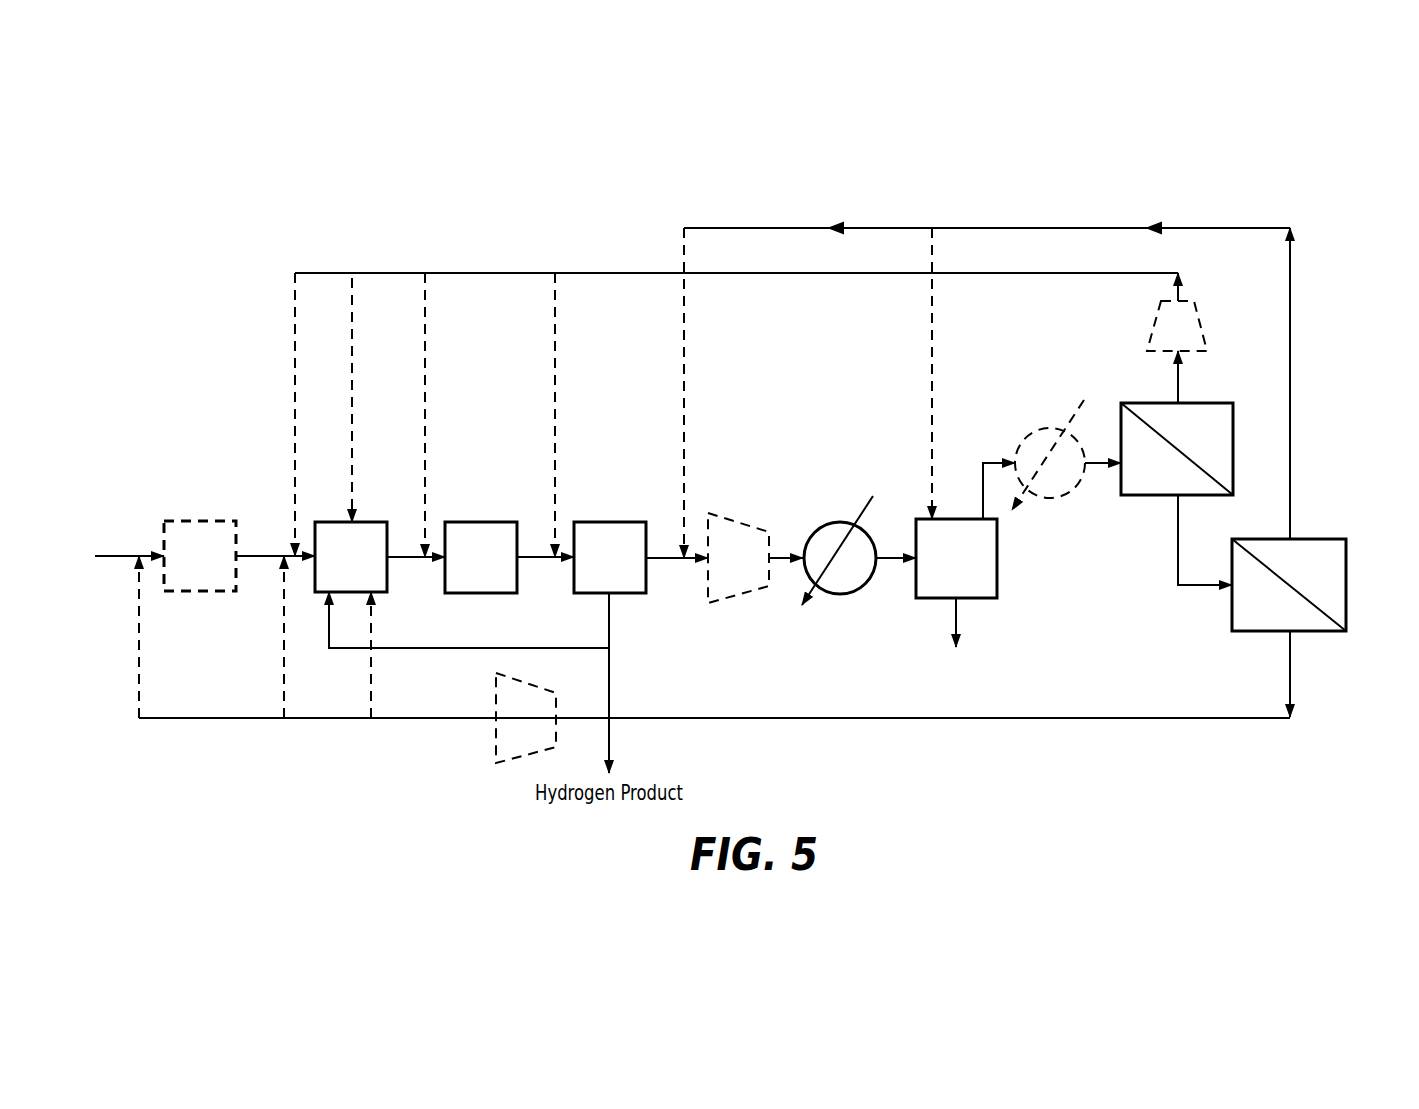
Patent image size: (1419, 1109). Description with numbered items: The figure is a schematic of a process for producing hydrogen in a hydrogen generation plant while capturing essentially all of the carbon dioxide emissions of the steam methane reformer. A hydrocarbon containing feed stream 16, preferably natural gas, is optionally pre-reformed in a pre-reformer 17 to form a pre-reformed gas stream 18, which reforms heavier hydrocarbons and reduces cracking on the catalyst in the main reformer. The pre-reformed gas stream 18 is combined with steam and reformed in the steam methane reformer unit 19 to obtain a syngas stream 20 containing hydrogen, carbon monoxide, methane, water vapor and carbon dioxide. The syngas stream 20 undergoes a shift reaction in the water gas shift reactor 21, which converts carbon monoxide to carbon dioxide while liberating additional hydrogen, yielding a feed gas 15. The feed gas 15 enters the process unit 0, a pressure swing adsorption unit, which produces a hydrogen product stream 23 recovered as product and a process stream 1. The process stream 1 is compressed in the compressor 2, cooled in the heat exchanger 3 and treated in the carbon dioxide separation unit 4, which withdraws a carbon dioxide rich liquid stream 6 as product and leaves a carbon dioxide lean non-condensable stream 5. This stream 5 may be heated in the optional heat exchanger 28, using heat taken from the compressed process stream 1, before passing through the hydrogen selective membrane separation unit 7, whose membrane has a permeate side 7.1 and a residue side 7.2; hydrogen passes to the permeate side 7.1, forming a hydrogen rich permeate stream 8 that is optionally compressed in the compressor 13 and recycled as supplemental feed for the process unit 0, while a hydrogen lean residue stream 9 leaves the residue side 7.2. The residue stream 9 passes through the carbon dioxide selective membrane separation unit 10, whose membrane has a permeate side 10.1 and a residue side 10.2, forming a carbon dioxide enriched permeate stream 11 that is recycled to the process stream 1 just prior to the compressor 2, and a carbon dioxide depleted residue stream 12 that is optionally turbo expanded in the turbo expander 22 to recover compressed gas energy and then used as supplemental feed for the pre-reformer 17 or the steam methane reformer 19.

The process unit 0 is at (602, 566).
The process stream 1 is at (677, 543).
The compressor 2 is at (730, 568).
The heat exchanger 3 is at (843, 569).
The carbon dioxide separation unit 4 is at (948, 568).
The carbon dioxide lean non-condensable stream 5 is at (1103, 449).
The carbon dioxide rich liquid stream 6 is at (955, 638).
The hydrogen selective membrane separation unit 7 is at (1233, 409).
The permeate side 7.1 is at (1187, 437).
The residue side 7.2 is at (1135, 484).
The hydrogen rich permeate stream 8 is at (747, 323).
The hydrogen lean residue stream 9 is at (1205, 540).
The carbon dioxide selective membrane separation unit 10 is at (1346, 552).
The permeate side 10.1 is at (1289, 573).
The residue side 10.2 is at (1246, 620).
The carbon dioxide enriched permeate stream 11 is at (987, 370).
The carbon dioxide depleted residue stream 12 is at (1308, 674).
The compressor 13 is at (1199, 316).
The feed gas 15 is at (545, 573).
The hydrocarbon containing feed stream 16 is at (129, 542).
The pre-reformer 17 is at (186, 566).
The pre-reformed gas stream 18 is at (275, 572).
The steam methane reformer unit 19 is at (337, 566).
The syngas stream 20 is at (416, 573).
The water gas shift reactor 21 is at (467, 566).
The turbo expander 22 is at (512, 728).
The hydrogen product stream 23 is at (626, 683).
The optional heat exchanger 28 is at (1046, 474).